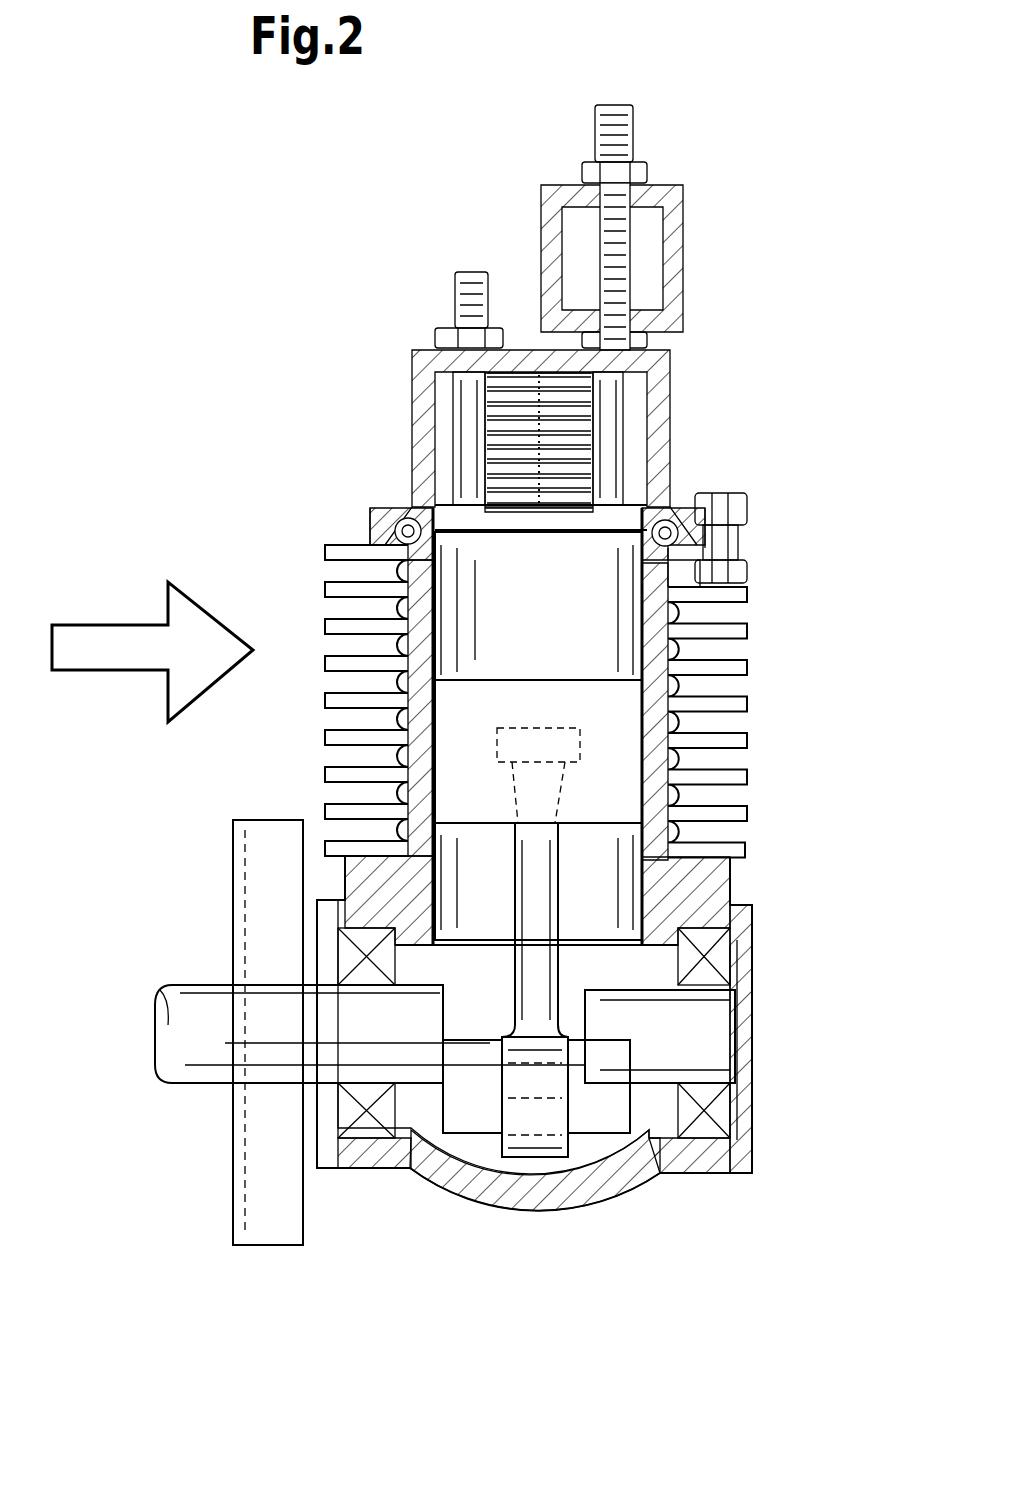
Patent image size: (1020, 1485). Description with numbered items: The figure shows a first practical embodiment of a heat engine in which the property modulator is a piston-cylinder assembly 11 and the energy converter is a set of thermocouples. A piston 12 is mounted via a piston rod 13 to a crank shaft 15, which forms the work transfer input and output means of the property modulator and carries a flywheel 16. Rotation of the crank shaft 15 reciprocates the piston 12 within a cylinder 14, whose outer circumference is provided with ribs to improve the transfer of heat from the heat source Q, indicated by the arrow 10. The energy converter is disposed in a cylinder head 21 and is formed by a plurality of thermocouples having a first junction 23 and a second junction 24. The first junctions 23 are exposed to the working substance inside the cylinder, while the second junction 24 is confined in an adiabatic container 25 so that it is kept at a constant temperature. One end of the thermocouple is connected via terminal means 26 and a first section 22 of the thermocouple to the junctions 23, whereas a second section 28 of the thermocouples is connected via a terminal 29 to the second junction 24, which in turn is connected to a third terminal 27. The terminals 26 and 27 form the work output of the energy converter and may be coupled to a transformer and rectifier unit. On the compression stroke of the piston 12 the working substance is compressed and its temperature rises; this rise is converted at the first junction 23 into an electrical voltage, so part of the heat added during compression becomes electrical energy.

The air flow arrow Q 10 is at (187, 633).
The piston-cylinder assembly 11 is at (762, 760).
The piston 12 is at (600, 805).
The piston rod 13 is at (525, 888).
The cylinder 14 is at (330, 737).
The crank shaft 15 is at (185, 1063).
The flywheel 16 is at (248, 1248).
The cylinder head 21 is at (653, 462).
The first section of the thermocouple 22 is at (498, 490).
The first junction 23 is at (540, 504).
The second junction 24 is at (630, 253).
The adiabatic container 25 is at (683, 207).
The terminal means 26 is at (453, 298).
The third terminal 27 is at (628, 105).
The second section of the thermocouple 28 is at (747, 521).
The terminal 29 is at (633, 413).